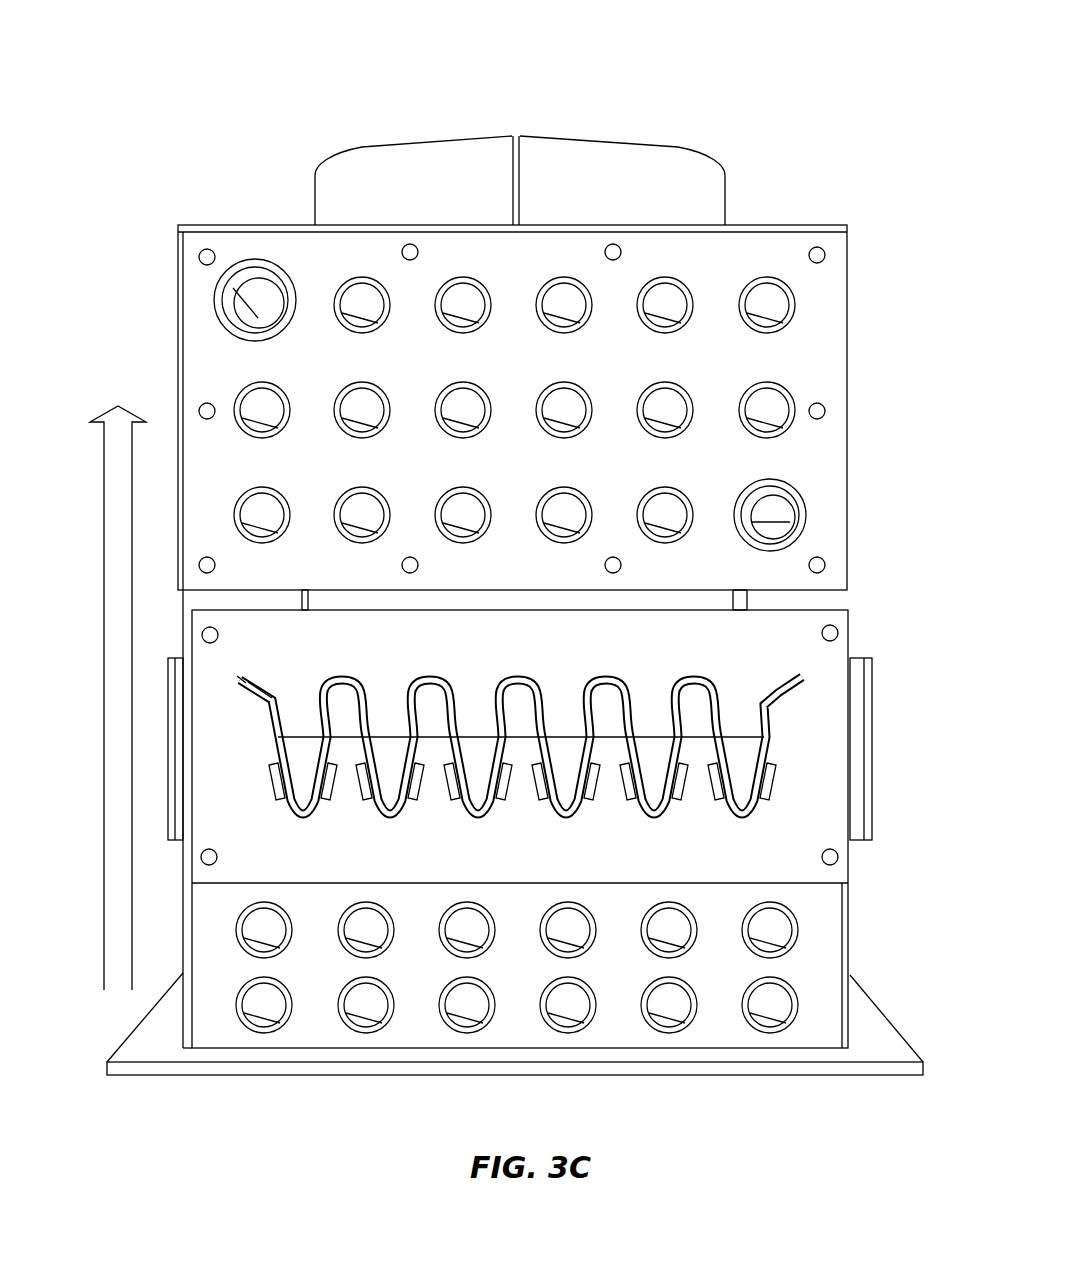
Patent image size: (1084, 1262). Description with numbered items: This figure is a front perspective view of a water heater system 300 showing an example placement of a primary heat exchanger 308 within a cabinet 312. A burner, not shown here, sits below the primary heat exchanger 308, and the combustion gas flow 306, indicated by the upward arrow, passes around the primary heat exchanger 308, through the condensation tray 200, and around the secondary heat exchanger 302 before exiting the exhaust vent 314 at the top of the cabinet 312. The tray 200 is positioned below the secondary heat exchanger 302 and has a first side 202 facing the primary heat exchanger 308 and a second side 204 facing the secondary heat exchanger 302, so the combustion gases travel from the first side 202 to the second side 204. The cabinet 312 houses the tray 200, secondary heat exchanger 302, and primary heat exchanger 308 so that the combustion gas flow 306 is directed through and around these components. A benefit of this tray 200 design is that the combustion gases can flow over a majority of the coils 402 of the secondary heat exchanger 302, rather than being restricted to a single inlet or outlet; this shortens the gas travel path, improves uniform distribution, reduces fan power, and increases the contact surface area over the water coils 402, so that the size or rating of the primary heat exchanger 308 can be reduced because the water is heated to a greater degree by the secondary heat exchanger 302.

The water heater system 300 is at (250, 102).
The cabinet 312 is at (180, 225).
The exhaust vent 314 is at (650, 142).
The secondary heat exchanger 302 is at (822, 420).
The coils 402 is at (762, 278).
The primary heat exchanger 308 is at (806, 985).
The condensation tray 200 is at (804, 782).
The first side 202 is at (238, 694).
The second side 204 is at (276, 680).
The combustion gas flow 306 is at (104, 640).